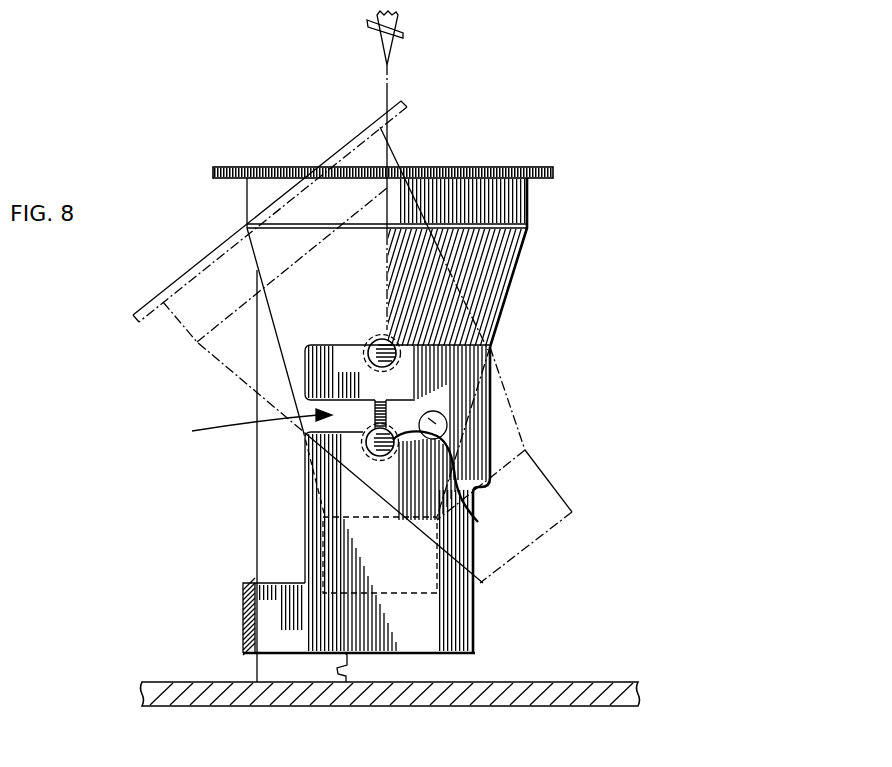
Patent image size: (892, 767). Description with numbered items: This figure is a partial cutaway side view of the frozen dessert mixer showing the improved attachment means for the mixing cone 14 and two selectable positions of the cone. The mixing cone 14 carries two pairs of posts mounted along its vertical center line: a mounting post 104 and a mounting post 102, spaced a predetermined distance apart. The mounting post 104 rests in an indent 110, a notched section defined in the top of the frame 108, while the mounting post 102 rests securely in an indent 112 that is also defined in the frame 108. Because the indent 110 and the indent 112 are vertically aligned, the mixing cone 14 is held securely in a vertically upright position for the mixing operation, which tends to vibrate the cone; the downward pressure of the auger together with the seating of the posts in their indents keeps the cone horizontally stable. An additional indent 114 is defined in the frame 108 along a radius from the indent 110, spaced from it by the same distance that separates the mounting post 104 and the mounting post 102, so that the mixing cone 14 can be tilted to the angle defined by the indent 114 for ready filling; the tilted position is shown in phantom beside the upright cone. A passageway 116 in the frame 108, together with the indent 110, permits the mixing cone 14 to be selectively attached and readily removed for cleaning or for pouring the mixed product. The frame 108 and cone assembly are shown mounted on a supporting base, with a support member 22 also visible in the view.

The mixing cone 14 is at (525, 207).
The support post 22 is at (272, 514).
The mounting post 102 is at (384, 430).
The mounting post 104 is at (381, 350).
The frame 108 is at (243, 600).
The indent 110 is at (370, 364).
The indent 112 is at (368, 450).
The indent 114 is at (478, 522).
The passageway 116 is at (247, 425).